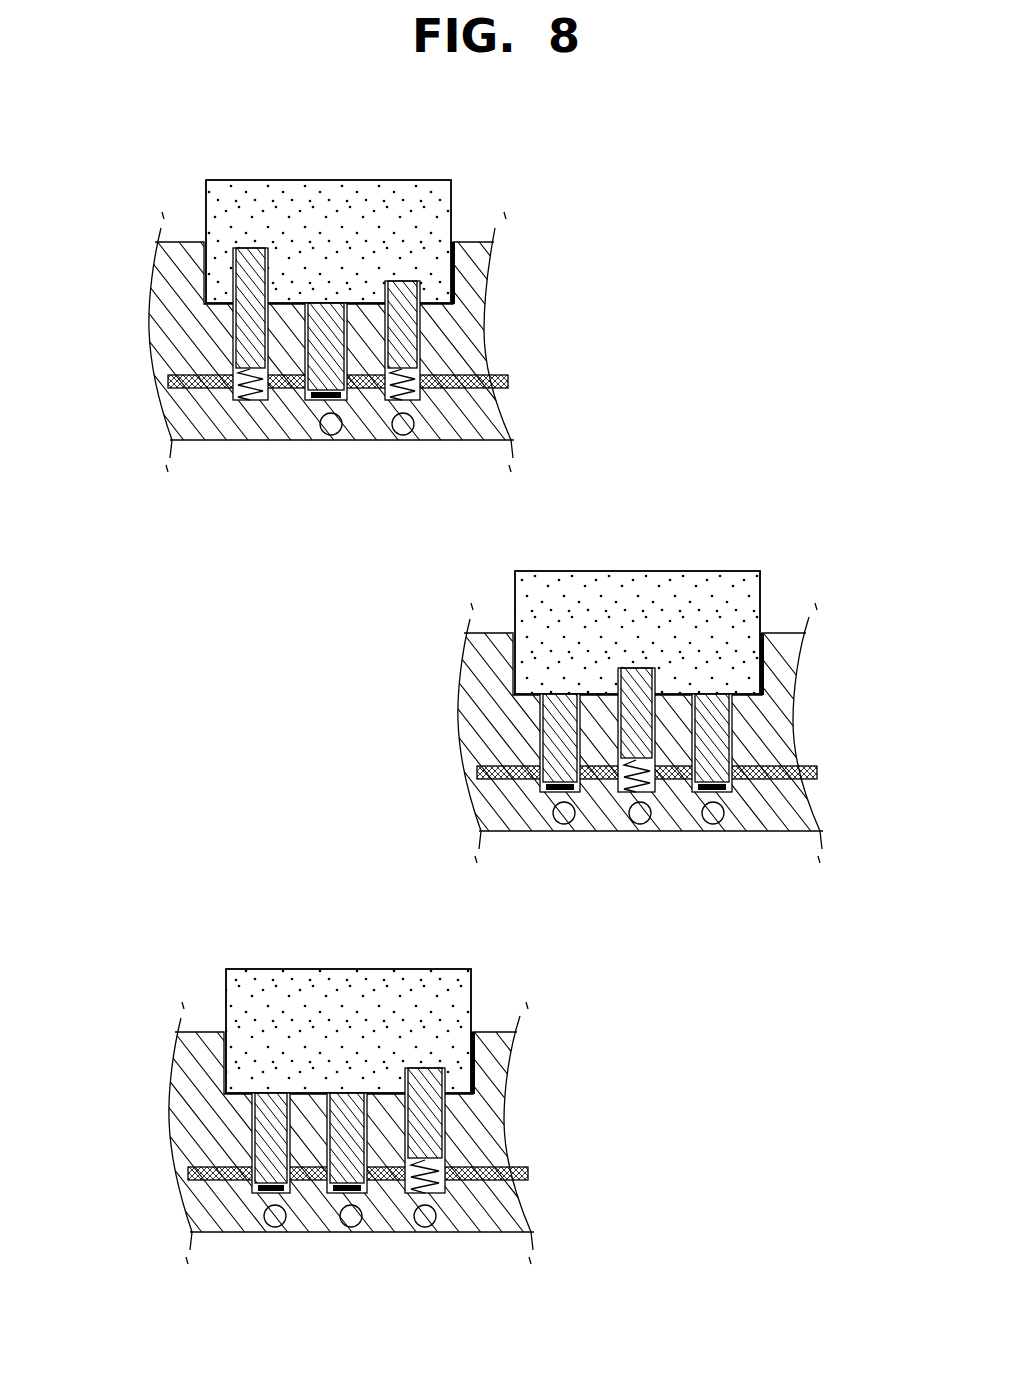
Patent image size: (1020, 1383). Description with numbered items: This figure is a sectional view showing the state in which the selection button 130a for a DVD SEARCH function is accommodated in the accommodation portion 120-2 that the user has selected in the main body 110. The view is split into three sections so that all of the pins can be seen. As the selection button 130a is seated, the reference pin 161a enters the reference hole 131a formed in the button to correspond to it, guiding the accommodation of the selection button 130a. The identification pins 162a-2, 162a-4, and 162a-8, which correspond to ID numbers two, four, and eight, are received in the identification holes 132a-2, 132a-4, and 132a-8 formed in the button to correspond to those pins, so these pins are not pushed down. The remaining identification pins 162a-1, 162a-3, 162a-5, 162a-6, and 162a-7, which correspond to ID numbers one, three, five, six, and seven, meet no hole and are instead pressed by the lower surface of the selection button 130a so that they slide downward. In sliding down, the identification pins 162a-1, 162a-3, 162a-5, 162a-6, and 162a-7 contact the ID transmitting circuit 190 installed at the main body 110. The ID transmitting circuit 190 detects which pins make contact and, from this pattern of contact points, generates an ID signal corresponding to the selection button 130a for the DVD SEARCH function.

The main body 110 is at (478, 297).
The accommodation portion 120-2 is at (460, 243).
The selection button 130a is at (372, 180).
The reference hole 131a is at (237, 248).
The identification hole 132a-2 is at (428, 285).
The identification hole 132a-4 is at (660, 690).
The identification hole 132a-8 is at (415, 1067).
The reference pin 161a is at (234, 292).
The identification pin 162a-1 is at (312, 403).
The identification pin 162a-2 is at (422, 405).
The identification pin 162a-3 is at (545, 722).
The identification pin 162a-4 is at (621, 797).
The identification pin 162a-5 is at (735, 795).
The identification pin 162a-6 is at (260, 1135).
The identification pin 162a-7 is at (333, 1195).
The identification pin 162a-8 is at (433, 1133).
The ID transmitting circuit 190 is at (507, 387).